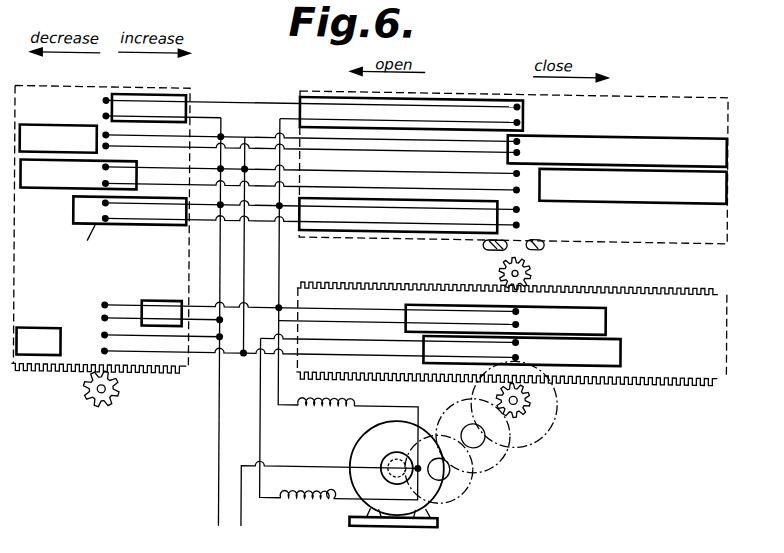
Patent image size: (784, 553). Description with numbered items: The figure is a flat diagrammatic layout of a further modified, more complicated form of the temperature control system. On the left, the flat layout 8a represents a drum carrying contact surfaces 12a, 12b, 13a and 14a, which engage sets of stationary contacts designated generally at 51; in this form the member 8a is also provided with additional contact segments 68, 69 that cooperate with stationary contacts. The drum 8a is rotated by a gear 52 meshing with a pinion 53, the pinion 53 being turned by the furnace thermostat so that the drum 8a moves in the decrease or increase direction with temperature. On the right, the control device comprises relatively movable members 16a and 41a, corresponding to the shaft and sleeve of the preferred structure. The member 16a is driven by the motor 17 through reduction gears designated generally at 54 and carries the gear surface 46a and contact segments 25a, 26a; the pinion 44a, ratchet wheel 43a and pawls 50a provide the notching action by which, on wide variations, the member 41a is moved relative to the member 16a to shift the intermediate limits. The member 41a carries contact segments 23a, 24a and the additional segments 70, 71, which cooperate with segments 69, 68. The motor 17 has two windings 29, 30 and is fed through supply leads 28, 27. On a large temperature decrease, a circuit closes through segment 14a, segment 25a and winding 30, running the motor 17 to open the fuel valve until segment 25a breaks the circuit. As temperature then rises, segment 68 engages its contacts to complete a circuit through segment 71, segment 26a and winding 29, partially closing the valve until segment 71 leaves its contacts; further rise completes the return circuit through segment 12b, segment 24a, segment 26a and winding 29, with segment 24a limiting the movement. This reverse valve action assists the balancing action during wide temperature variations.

The drum member 8a is at (68, 89).
The contact surface 12a is at (141, 96).
The contact surface 12b is at (62, 123).
The contact segment 68 is at (44, 193).
The contact segment 69 is at (136, 229).
The stationary contacts 51 is at (104, 306).
The contact surface 14a is at (155, 303).
The contact surface 13a is at (43, 331).
The gear 52 is at (156, 377).
The pinion 53 is at (121, 398).
The supply lead 28 is at (213, 332).
The supply lead 27 is at (324, 506).
The motor winding 29 is at (308, 506).
The motor winding 30 is at (340, 412).
The motor 17 is at (432, 506).
The gears 54 is at (485, 465).
The movable member 41a is at (728, 106).
The contact segment 23a is at (452, 99).
The contact segment 24a is at (605, 132).
The contact segment 71 is at (628, 197).
The contact segment 70 is at (410, 231).
The ratchet wheel 43a is at (497, 280).
The pawls 50a is at (548, 242).
The pinion 44a is at (540, 272).
The gear surface 46a is at (631, 283).
The movable member 16a is at (728, 329).
The contact segment 25a is at (610, 316).
The contact segment 26a is at (625, 351).